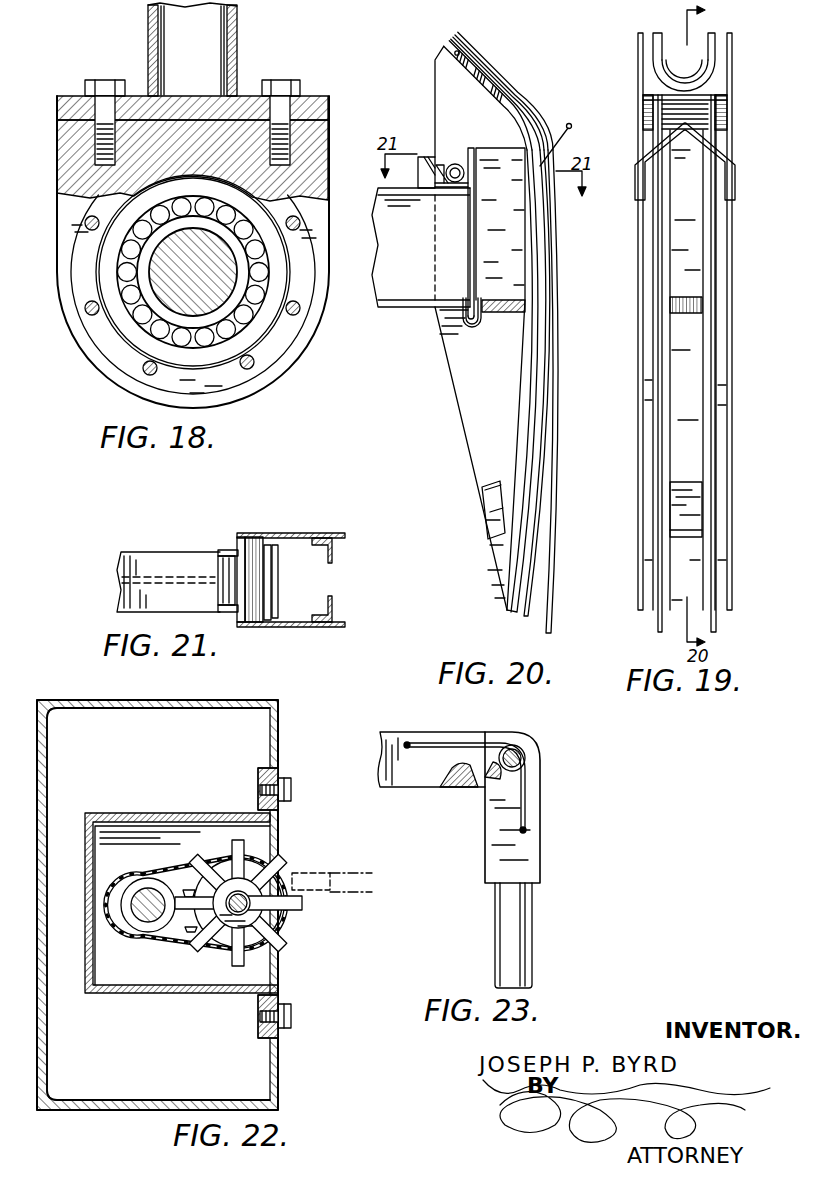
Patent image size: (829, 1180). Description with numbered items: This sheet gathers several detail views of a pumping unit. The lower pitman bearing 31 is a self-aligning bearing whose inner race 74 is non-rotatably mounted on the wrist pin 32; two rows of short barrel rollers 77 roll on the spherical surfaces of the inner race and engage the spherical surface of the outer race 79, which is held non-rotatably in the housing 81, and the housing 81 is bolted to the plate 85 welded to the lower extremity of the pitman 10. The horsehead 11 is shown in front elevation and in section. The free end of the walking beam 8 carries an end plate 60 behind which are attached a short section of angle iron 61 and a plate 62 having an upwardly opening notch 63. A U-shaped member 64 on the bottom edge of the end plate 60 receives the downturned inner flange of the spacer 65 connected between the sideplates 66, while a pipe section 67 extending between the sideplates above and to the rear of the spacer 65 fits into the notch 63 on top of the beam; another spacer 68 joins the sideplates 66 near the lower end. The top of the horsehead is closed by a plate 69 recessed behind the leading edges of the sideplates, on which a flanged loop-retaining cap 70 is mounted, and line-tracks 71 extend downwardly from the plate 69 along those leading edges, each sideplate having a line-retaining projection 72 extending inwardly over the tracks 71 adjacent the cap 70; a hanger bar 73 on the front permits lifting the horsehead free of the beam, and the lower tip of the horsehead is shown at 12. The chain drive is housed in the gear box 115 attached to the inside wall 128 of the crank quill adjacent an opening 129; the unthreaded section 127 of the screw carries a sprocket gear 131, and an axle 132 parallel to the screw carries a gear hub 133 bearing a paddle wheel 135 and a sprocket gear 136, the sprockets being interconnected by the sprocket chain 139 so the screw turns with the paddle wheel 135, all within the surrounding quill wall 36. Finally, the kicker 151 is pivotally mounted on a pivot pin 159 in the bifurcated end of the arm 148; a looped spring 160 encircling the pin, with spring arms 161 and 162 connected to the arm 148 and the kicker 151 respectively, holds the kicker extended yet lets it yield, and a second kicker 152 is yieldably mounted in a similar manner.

In FIG. 20, the walking beam 8 is at (410, 305).
In FIG. 21, the walking beam 8 is at (130, 562).
In FIG. 18, the pitman 10 is at (148, 30).
In FIG. 20, the horsehead 11 is at (462, 446).
In FIG. 19, the horsehead 11 is at (733, 264).
In FIG. 20, the rod 12 is at (553, 608).
In FIG. 19, the rod 12 is at (712, 626).
In FIG. 18, the lower pitman bearing 31 is at (138, 322).
In FIG. 18, the wrist pin 32 is at (152, 278).
In FIG. 22, the housing 36 is at (90, 700).
In FIG. 20, the end plate 60 is at (474, 236).
In FIG. 21, the end plate 60 is at (275, 585).
In FIG. 20, the angle iron 61 is at (450, 187).
In FIG. 21, the angle iron 61 is at (268, 562).
In FIG. 20, the plate 62 is at (422, 157).
In FIG. 21, the plate 62 is at (223, 553).
In FIG. 20, the notch 63 is at (442, 160).
In FIG. 21, the notch 63 is at (238, 548).
In FIG. 20, the U-shaped member 64 is at (467, 327).
In FIG. 20, the spacer 65 is at (492, 322).
In FIG. 19, the spacer 65 is at (697, 302).
In FIG. 20, the sideplates 66 is at (475, 401).
In FIG. 19, the sideplates 66 is at (643, 395).
In FIG. 21, the sideplates 66 is at (332, 534).
In FIG. 20, the pipe section 67 is at (457, 163).
In FIG. 21, the pipe section 67 is at (253, 547).
In FIG. 20, the spacer 68 is at (488, 519).
In FIG. 19, the spacer 68 is at (693, 512).
In FIG. 20, the plate 69 is at (528, 106).
In FIG. 19, the plate 69 is at (697, 117).
In FIG. 20, the flanged loop-retaining cap 70 is at (482, 58).
In FIG. 19, the flanged loop-retaining cap 70 is at (700, 47).
In FIG. 20, the line-tracks 71 is at (538, 498).
In FIG. 19, the line-tracks 71 is at (705, 453).
In FIG. 21, the line-tracks 71 is at (333, 600).
In FIG. 20, the line-retaining projection 72 is at (525, 88).
In FIG. 19, the line-retaining projection 72 is at (657, 84).
In FIG. 20, the hanger bar 73 is at (570, 124).
In FIG. 19, the hanger bar 73 is at (722, 147).
In FIG. 18, the inner race 74 is at (172, 315).
In FIG. 18, the barrel rollers 77 is at (252, 300).
In FIG. 18, the outer race 79 is at (278, 290).
In FIG. 18, the housing 81 is at (60, 227).
In FIG. 18, the plate 85 is at (70, 105).
In FIG. 22, the gear box 115 is at (132, 815).
In FIG. 22, the unthreaded section 127 is at (148, 886).
In FIG. 22, the inside wall 128 is at (283, 1038).
In FIG. 22, the opening 129 is at (283, 998).
In FIG. 22, the sprocket gear 131 is at (148, 938).
In FIG. 22, the axle 132 is at (250, 908).
In FIG. 22, the gear hub 133 is at (247, 888).
In FIG. 22, the paddle wheel 135 is at (302, 903).
In FIG. 22, the sprocket gear 136 is at (220, 940).
In FIG. 22, the sprocket chain 139 is at (168, 942).
In FIG. 23, the arm 148 is at (408, 781).
In FIG. 23, the kicker 151 is at (515, 913).
In FIG. 22, the kicker 152 is at (308, 876).
In FIG. 23, the pivot pin 159 is at (522, 760).
In FIG. 23, the looped spring 160 is at (507, 777).
In FIG. 23, the spring arm 161 is at (466, 720).
In FIG. 23, the spring arm 162 is at (535, 807).